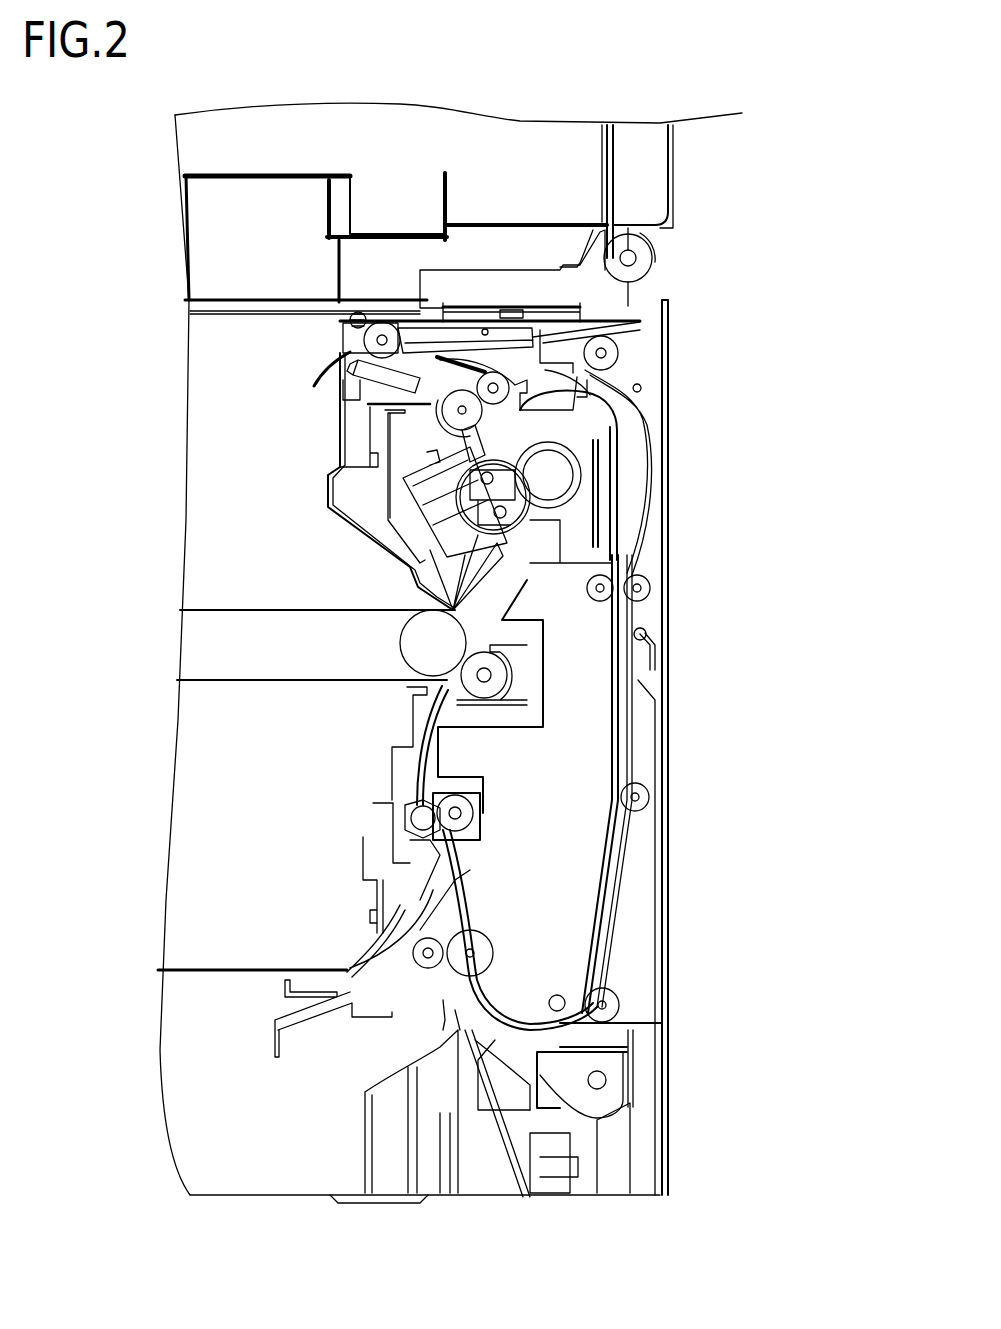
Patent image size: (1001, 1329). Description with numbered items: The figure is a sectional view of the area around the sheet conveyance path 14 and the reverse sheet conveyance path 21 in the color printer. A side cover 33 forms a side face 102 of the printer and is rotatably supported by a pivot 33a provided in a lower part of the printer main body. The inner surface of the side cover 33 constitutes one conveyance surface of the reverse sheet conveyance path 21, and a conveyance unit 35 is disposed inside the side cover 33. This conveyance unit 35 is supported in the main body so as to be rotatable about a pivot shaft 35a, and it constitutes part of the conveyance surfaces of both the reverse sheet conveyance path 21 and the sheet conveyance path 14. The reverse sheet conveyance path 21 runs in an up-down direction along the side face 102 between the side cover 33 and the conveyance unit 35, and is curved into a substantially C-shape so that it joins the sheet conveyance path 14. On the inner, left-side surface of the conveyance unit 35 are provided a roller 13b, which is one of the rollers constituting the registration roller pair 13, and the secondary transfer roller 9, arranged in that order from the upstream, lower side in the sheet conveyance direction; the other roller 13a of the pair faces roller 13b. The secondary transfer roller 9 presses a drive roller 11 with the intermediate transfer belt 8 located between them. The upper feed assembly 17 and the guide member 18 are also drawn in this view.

The sheet feed unit 17 is at (484, 343).
The guide member 18 is at (357, 345).
The side cover 33 is at (668, 480).
The side face 102 is at (695, 560).
The intermediate transfer belt 8 is at (275, 610).
The drive roller 11 is at (398, 655).
The secondary transfer roller 9 is at (495, 683).
The sheet conveyance path 14 is at (430, 745).
The reverse sheet conveyance path 21 is at (617, 742).
The registration roller pair 13 is at (358, 854).
The roller 13b is at (450, 805).
The registration driven roller 13a is at (423, 820).
The conveyance unit 35 is at (573, 853).
The pivot shaft 35a is at (562, 1000).
The pivot 33a is at (607, 1073).